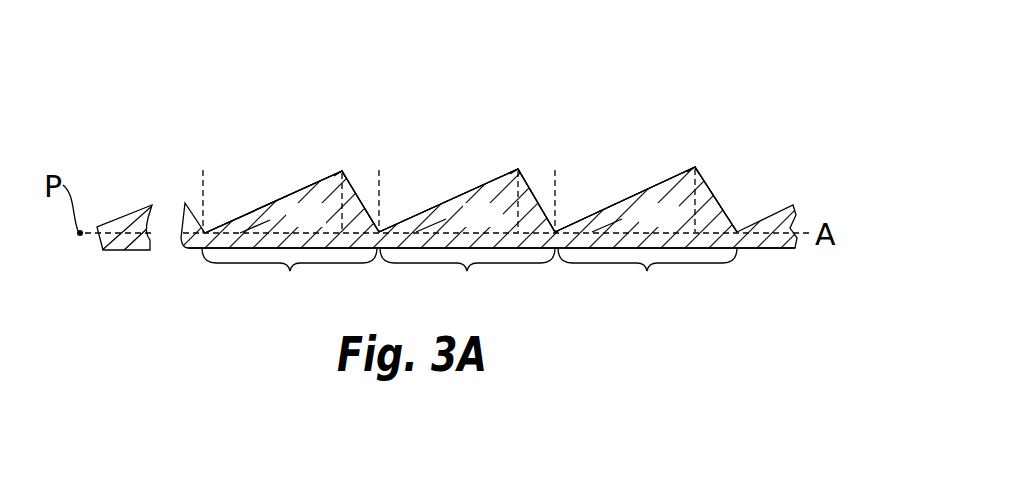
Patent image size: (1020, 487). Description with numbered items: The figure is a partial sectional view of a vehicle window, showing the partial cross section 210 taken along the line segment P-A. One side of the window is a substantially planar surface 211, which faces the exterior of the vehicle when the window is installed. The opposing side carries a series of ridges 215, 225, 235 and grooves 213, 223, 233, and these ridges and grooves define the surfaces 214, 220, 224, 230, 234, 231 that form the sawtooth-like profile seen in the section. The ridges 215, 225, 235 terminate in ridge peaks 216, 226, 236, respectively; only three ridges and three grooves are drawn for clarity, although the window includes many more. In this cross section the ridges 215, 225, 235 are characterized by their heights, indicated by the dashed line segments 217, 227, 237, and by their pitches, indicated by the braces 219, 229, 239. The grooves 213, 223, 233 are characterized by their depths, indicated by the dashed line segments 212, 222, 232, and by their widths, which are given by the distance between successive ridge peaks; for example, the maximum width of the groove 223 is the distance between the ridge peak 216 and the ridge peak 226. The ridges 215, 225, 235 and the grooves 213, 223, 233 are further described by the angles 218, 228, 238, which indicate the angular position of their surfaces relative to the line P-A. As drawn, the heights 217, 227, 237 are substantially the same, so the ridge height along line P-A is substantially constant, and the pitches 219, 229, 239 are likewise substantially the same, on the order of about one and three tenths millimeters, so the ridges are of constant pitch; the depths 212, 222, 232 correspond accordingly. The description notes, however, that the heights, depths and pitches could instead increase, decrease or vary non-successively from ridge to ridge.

The partial cross section 210 is at (775, 90).
The substantially planar surface 211 is at (343, 250).
The dashed line segment 212 is at (202, 172).
The groove 213 is at (270, 146).
The surface 214 is at (262, 204).
The ridge 215 is at (328, 158).
The ridge peak 216 is at (329, 173).
The dashed line segment 217 is at (332, 174).
The angle 218 is at (276, 207).
The brace 219 is at (289, 278).
The surface 220 is at (357, 195).
The dashed line segment 222 is at (379, 172).
The groove 223 is at (450, 146).
The surface 224 is at (440, 204).
The ridge 225 is at (505, 156).
The ridge peak 226 is at (505, 171).
The dashed line segment 227 is at (509, 173).
The angle 228 is at (453, 207).
The brace 229 is at (467, 278).
The surface 230 is at (533, 194).
The surface 231 is at (713, 194).
The dashed line segment 232 is at (555, 172).
The groove 233 is at (628, 146).
The surface 234 is at (615, 204).
The ridge 235 is at (682, 153).
The ridge peak 236 is at (682, 169).
The dashed line segment 237 is at (685, 172).
The angle 238 is at (628, 207).
The brace 239 is at (647, 278).